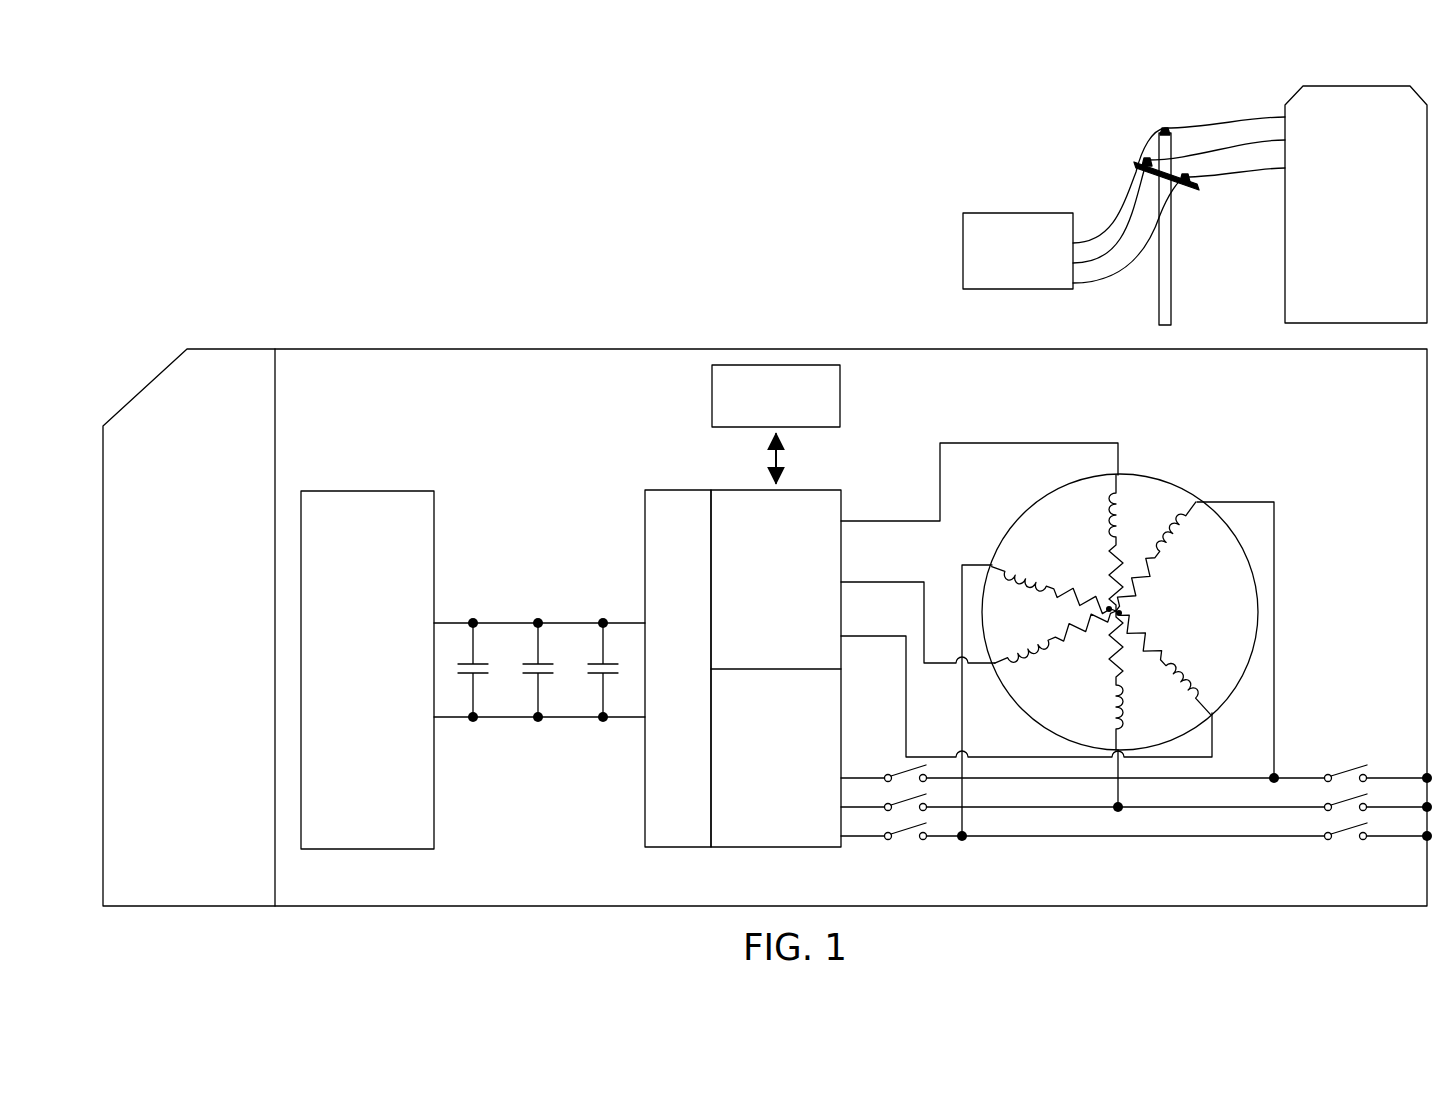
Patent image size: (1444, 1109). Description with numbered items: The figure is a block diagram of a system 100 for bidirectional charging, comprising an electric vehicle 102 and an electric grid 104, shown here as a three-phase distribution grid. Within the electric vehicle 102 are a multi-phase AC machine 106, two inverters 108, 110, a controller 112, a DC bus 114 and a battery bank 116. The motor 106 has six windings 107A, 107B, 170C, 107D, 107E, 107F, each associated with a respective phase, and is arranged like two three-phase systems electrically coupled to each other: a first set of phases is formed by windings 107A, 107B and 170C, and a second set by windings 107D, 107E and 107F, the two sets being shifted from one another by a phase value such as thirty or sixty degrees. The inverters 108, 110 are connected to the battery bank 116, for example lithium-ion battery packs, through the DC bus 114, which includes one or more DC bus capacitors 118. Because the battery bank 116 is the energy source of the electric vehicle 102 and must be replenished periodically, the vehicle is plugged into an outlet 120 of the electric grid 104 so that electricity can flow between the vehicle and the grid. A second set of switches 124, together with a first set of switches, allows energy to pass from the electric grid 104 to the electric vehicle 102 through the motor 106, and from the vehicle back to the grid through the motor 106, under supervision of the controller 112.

The system 100 is at (313, 192).
The electric vehicle 102 is at (232, 328).
The electric grid 104 is at (1098, 153).
The multi-phase AC machine 106 is at (1206, 450).
The winding 107A is at (1058, 593).
The winding 107B is at (1120, 672).
The winding 170C is at (1158, 560).
The winding 107D is at (1116, 553).
The winding 107E is at (1058, 645).
The winding 107F is at (1165, 660).
The inverter 108 is at (776, 850).
The inverter 110 is at (745, 488).
The controller 112 is at (712, 398).
The DC bus 114 is at (672, 850).
The battery bank 116 is at (368, 851).
The DC bus capacitors 118 is at (558, 602).
The outlet 120 is at (963, 253).
The second set of switches 124 is at (1348, 846).